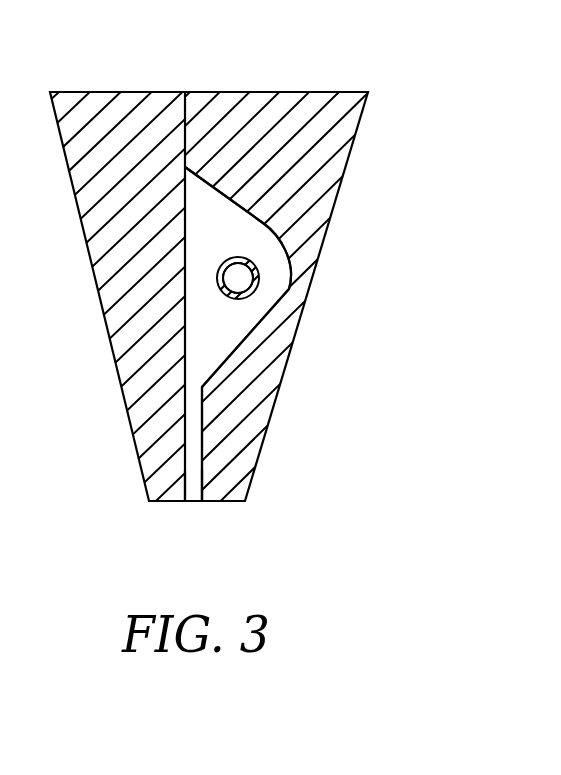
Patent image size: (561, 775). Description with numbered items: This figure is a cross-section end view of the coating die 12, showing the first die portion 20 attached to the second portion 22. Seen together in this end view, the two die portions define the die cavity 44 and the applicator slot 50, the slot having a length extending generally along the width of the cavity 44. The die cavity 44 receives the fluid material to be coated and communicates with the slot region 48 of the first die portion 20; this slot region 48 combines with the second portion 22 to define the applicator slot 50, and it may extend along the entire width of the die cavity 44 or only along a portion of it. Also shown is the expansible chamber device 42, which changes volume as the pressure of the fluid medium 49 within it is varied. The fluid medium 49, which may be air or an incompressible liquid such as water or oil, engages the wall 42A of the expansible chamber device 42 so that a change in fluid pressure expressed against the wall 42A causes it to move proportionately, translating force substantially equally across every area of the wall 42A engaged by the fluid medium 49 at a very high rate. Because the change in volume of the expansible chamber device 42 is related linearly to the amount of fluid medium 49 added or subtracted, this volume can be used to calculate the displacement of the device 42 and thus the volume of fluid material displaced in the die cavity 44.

The coating die 12 is at (440, 121).
The first die portion 20 is at (288, 92).
The second portion 22 is at (82, 92).
The expansible chamber device 42 is at (262, 312).
The wall 42A is at (259, 280).
The die cavity 44 is at (272, 245).
The slot region 48 is at (203, 417).
The fluid medium 49 is at (232, 278).
The applicator slot 50 is at (193, 501).